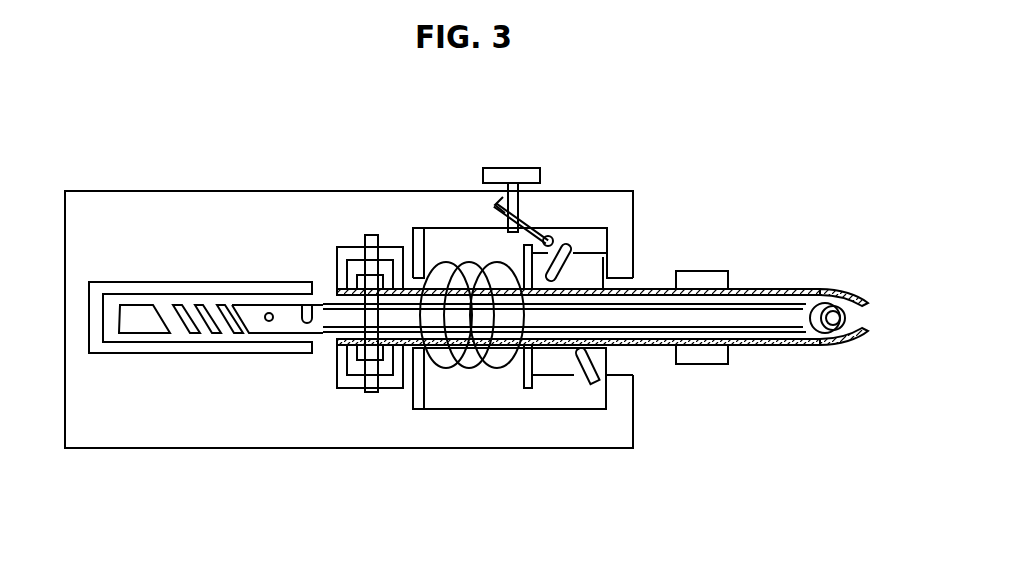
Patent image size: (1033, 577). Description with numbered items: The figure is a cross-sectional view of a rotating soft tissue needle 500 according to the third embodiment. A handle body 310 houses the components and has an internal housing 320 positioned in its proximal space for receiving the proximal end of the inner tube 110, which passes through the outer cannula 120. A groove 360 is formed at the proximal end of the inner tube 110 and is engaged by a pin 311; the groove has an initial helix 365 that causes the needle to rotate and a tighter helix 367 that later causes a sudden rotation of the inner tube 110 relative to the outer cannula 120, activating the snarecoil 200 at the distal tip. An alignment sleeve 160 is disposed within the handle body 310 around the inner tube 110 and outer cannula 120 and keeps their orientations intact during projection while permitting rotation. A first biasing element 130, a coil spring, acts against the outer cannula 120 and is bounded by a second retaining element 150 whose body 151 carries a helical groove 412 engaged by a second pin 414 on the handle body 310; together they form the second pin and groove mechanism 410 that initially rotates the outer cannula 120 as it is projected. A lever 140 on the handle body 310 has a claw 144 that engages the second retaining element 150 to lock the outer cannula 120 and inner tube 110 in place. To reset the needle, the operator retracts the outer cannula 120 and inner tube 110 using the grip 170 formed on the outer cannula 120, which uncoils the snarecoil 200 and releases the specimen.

The rotating soft tissue needle 500 is at (378, 148).
The handle body 310 is at (237, 197).
The internal housing 320 is at (130, 283).
The groove 360 is at (221, 279).
The tighter geometry helix portion 367 is at (168, 310).
The pin 311 is at (265, 313).
The initial helix portion 365 is at (305, 306).
The alignment sleeve 160 is at (350, 253).
The lever 140 is at (500, 171).
The claw 144 is at (546, 236).
The second pin 414 is at (556, 277).
The second pin and groove mechanism 410 is at (562, 262).
The groove 412 is at (586, 370).
The second retaining element 150 is at (528, 390).
The body 151 is at (552, 366).
The first biasing element 130 is at (477, 262).
The outer cannula 120 is at (790, 289).
The inner tube 110 is at (765, 306).
The snarecoil 200 is at (835, 303).
The grip 170 is at (705, 366).